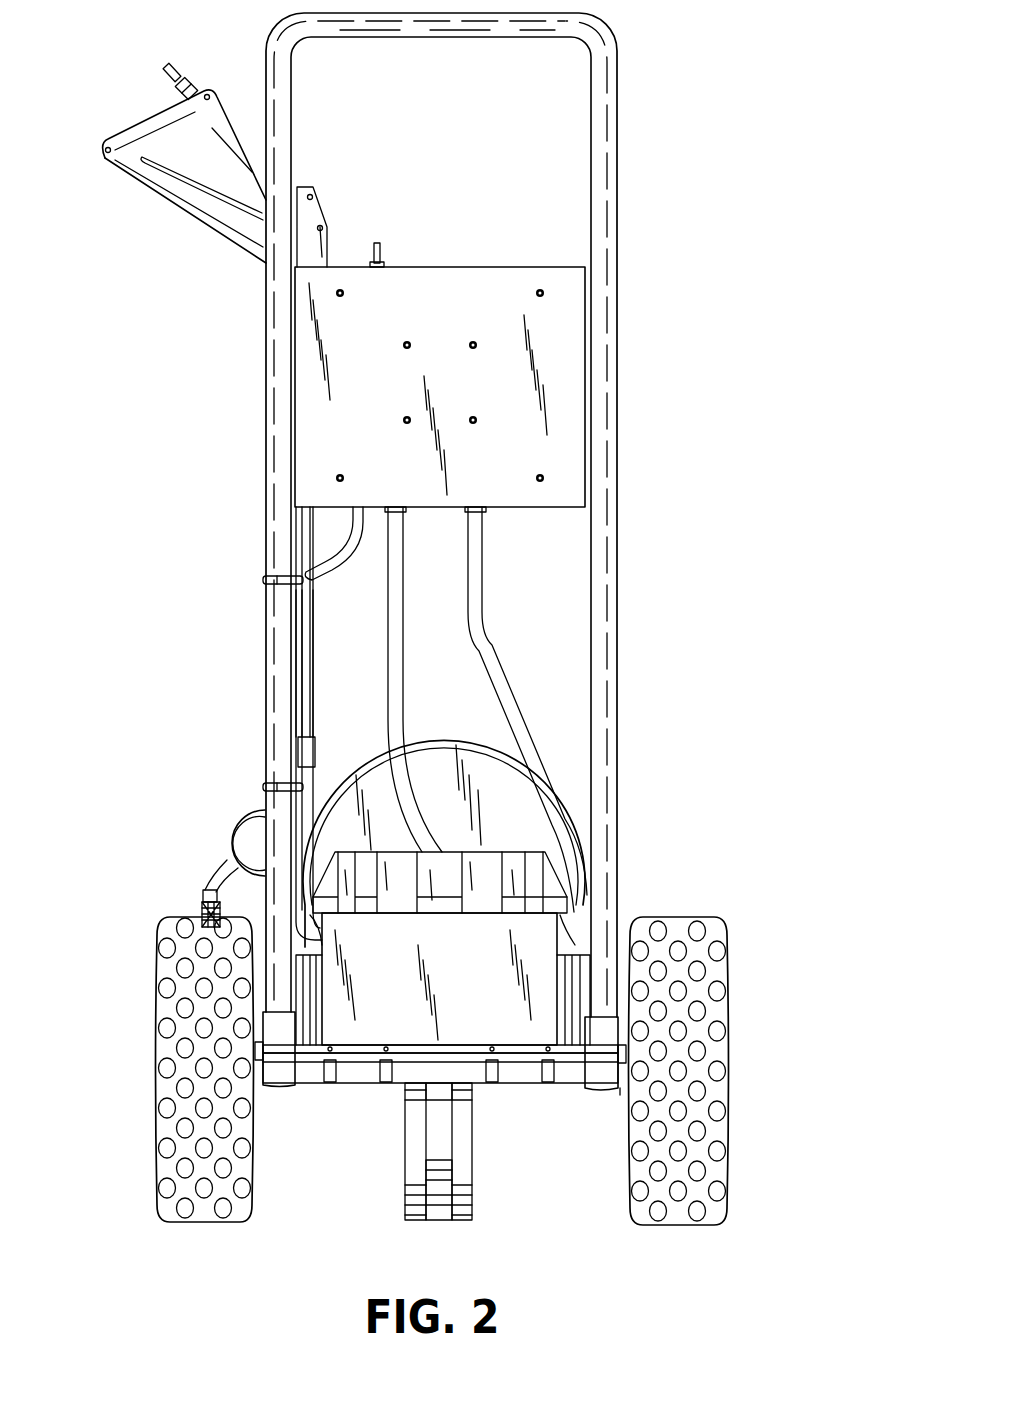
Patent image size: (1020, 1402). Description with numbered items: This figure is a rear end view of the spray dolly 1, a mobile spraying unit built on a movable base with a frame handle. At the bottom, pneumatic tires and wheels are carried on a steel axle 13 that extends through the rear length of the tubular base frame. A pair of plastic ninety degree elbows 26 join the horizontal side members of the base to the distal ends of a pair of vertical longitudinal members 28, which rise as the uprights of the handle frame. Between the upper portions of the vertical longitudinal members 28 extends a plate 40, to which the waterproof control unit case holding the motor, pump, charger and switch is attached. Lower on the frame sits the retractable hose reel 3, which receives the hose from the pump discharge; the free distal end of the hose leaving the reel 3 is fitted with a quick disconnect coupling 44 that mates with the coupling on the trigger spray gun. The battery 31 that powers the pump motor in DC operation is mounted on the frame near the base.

The spray dolly 1 is at (210, 556).
The retractable hose reel 3 is at (455, 727).
The steel axle 13 is at (620, 1092).
The ninety degree elbows 26 is at (605, 1040).
The vertical longitudinal members 28 is at (612, 567).
The battery 31 is at (450, 992).
The plate 40 is at (477, 291).
The quick disconnect coupling 44 is at (200, 898).